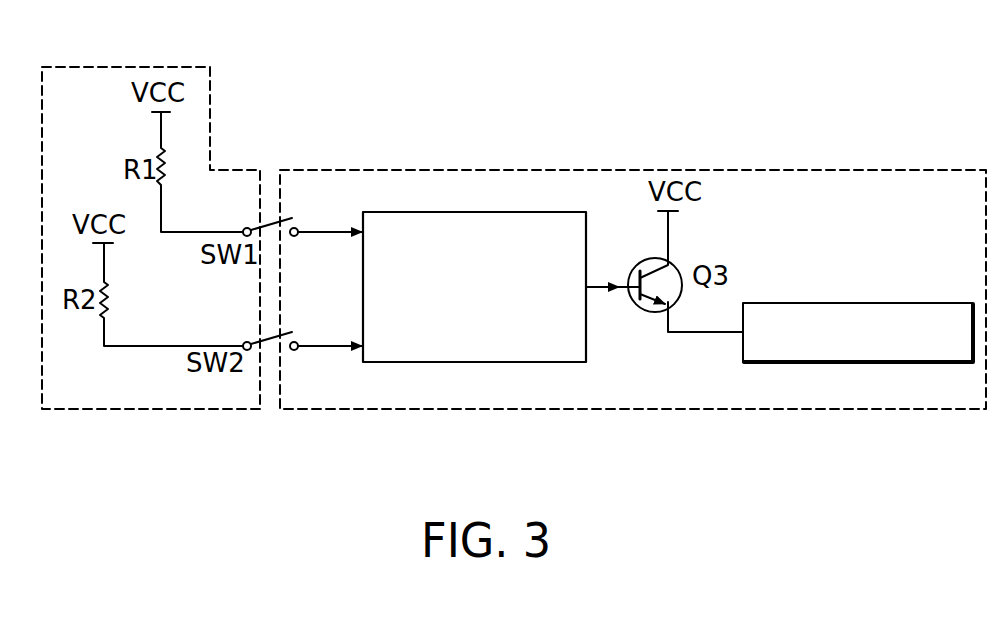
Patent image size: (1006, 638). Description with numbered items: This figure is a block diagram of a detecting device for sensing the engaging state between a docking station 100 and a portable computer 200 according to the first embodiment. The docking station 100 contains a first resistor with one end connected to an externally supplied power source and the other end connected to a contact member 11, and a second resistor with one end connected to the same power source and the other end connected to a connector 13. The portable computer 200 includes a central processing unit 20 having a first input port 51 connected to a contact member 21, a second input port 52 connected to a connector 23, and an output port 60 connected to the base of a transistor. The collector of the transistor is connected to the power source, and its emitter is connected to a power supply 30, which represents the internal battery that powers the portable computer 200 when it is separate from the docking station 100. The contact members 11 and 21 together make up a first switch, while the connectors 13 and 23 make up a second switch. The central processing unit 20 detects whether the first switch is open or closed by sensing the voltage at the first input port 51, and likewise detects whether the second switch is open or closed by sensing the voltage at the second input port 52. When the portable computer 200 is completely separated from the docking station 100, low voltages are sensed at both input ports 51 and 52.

The docking station 100 is at (110, 66).
The portable computer 200 is at (583, 167).
The contact member 11 is at (246, 226).
The contact member 21 is at (297, 227).
The connector 13 is at (247, 351).
The connector 23 is at (297, 351).
The central processing unit 20 is at (489, 315).
The first input port 51 is at (370, 232).
The second input port 52 is at (370, 346).
The output port 60 is at (596, 288).
The power supply 30 is at (857, 303).